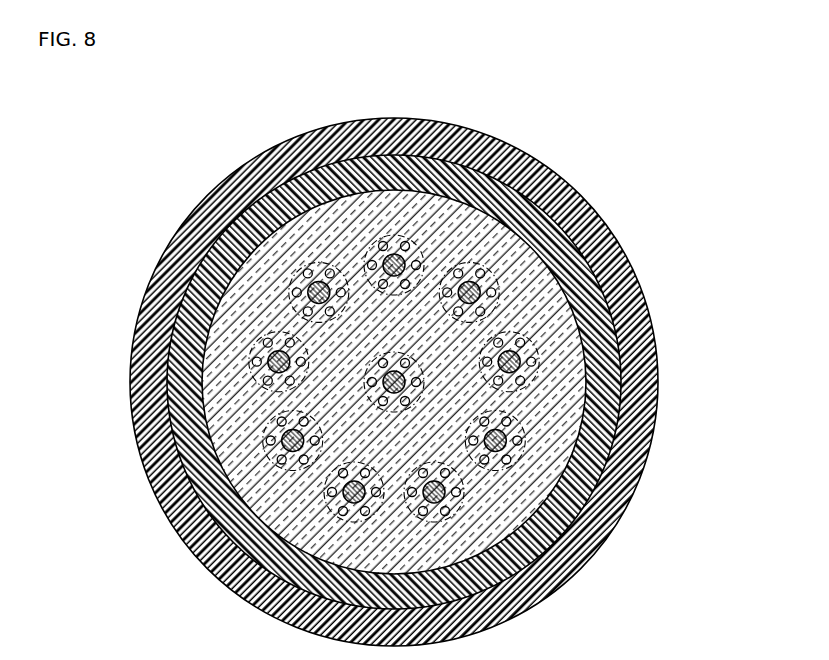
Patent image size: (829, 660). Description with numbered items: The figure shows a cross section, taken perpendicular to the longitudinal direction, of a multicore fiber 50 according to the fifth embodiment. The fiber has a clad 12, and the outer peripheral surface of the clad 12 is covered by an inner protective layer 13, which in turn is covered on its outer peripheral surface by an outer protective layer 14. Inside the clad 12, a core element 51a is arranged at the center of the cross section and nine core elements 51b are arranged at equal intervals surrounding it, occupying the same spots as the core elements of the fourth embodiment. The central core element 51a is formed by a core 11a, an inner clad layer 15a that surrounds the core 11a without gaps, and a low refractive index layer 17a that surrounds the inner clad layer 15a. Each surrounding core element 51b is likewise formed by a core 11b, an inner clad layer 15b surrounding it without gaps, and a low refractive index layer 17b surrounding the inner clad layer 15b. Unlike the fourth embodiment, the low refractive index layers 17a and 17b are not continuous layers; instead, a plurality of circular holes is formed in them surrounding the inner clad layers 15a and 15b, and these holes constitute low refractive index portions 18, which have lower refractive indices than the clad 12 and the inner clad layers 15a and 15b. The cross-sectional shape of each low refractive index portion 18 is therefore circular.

The multicore fiber 50 is at (680, 113).
The core element 51a is at (253, 349).
The core element 51b is at (397, 362).
The core 11a is at (374, 357).
The core 11b is at (396, 236).
The inner clad layer 15a is at (383, 375).
The inner clad layer 15b is at (392, 255).
The low refractive index layer 17a is at (380, 403).
The low refractive index layer 17b is at (371, 261).
The clad 12 is at (544, 259).
The inner protective layer 13 is at (608, 432).
The outer protective layer 14 is at (643, 377).
The low refractive index portion 18 is at (305, 167).